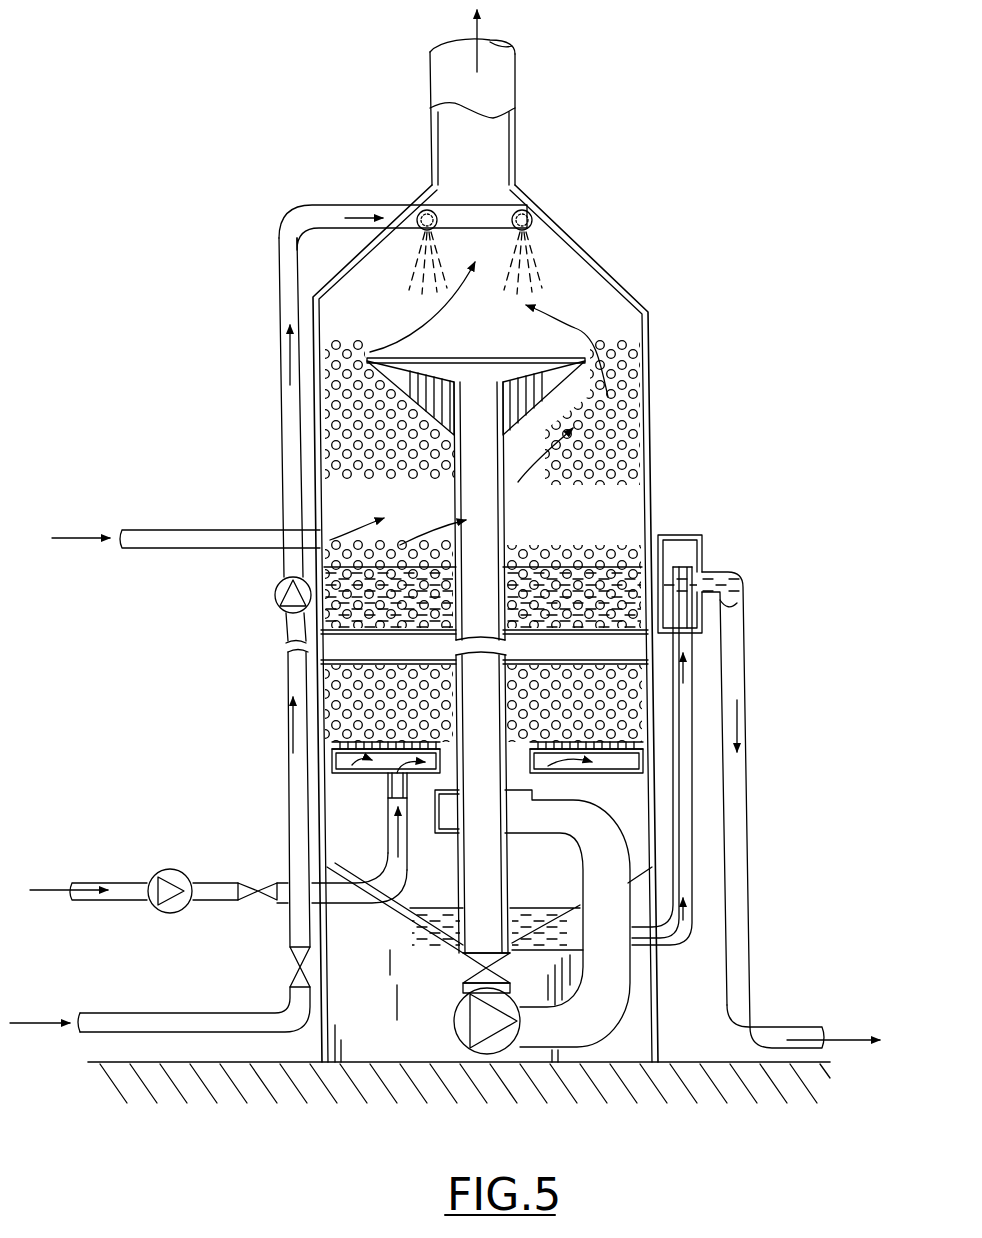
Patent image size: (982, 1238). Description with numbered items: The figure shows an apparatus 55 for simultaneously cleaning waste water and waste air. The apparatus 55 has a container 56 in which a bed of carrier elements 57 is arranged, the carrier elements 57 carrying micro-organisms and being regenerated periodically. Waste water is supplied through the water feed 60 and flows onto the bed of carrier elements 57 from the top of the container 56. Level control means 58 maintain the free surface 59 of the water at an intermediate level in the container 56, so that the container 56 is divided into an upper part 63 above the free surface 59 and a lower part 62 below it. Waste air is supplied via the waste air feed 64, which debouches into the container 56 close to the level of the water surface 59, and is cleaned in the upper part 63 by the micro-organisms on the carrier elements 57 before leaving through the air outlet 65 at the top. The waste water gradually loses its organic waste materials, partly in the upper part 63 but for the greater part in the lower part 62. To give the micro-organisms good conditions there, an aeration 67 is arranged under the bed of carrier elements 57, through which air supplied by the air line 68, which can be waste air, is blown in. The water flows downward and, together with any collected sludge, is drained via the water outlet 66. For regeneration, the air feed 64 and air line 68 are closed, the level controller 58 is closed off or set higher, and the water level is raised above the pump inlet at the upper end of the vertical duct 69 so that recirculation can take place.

The apparatus 55 is at (614, 253).
The container 56 is at (650, 400).
The carrier elements 57 is at (610, 473).
The level control means 58 is at (714, 548).
The free surface 59 is at (520, 567).
The water feed 60 is at (132, 1023).
The lower part 62 is at (337, 686).
The upper part 63 is at (340, 448).
The waste air feed 64 is at (165, 540).
The air outlet 65 is at (497, 78).
The water outlet 66 is at (765, 1035).
The aeration 67 is at (334, 749).
The air line 68 is at (122, 887).
The vertical duct 69 is at (503, 497).